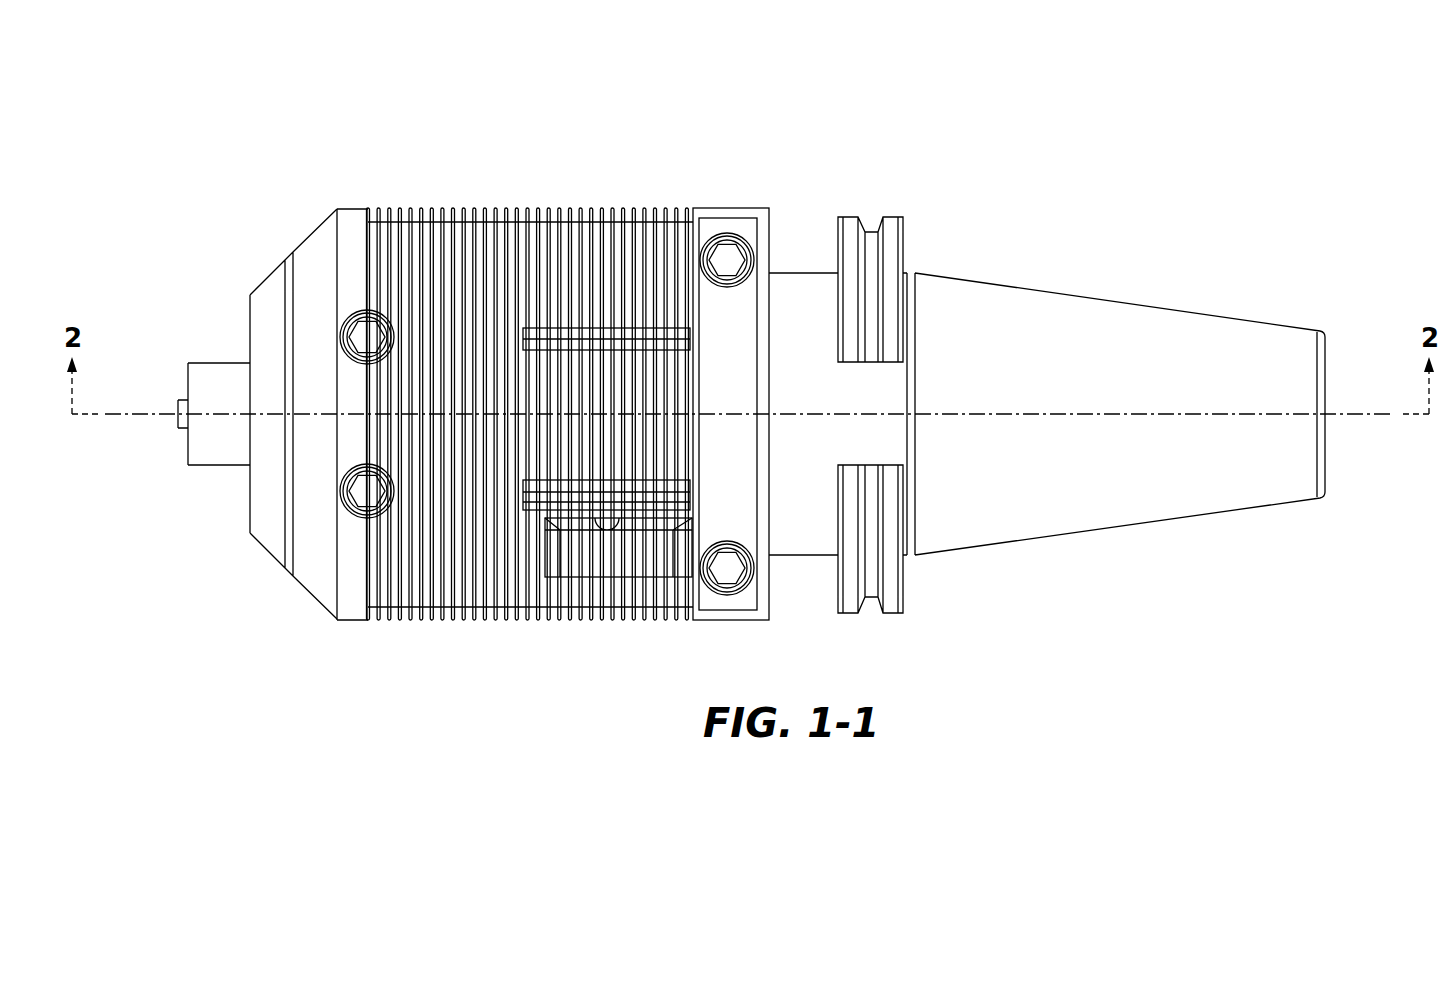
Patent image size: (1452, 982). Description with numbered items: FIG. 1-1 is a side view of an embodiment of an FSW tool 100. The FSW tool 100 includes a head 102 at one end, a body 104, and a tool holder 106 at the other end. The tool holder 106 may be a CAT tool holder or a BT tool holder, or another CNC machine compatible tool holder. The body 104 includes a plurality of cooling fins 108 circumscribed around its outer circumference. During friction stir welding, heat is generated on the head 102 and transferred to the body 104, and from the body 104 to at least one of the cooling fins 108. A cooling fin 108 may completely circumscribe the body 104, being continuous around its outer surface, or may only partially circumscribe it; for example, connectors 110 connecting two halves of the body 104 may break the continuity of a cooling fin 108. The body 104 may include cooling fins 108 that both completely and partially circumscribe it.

The FSW tool 100 is at (1170, 110).
The head 102 is at (222, 378).
The body 104 is at (510, 208).
The tool holder 106 is at (1190, 337).
The cooling fins 108 is at (507, 620).
The connectors 110 is at (730, 570).